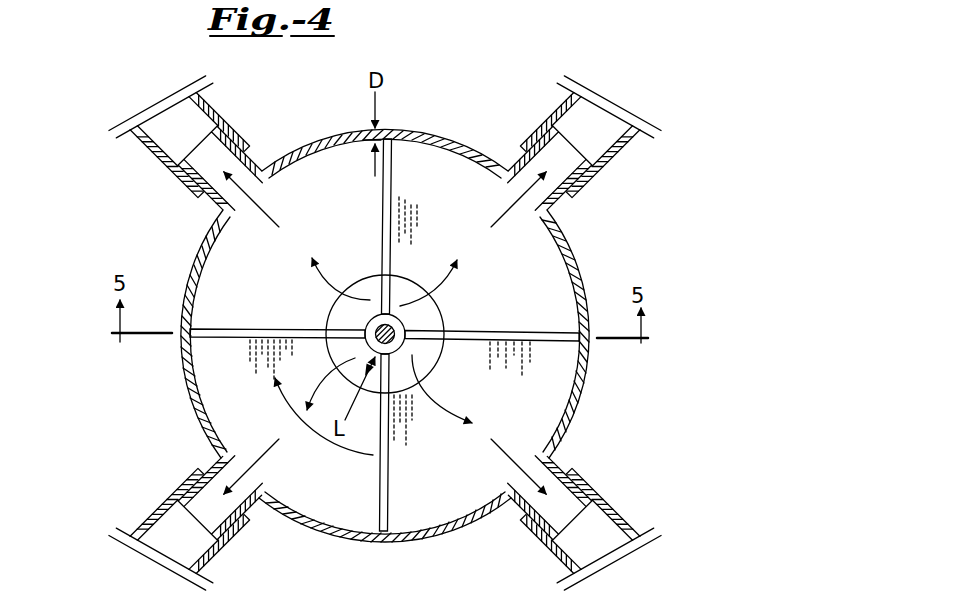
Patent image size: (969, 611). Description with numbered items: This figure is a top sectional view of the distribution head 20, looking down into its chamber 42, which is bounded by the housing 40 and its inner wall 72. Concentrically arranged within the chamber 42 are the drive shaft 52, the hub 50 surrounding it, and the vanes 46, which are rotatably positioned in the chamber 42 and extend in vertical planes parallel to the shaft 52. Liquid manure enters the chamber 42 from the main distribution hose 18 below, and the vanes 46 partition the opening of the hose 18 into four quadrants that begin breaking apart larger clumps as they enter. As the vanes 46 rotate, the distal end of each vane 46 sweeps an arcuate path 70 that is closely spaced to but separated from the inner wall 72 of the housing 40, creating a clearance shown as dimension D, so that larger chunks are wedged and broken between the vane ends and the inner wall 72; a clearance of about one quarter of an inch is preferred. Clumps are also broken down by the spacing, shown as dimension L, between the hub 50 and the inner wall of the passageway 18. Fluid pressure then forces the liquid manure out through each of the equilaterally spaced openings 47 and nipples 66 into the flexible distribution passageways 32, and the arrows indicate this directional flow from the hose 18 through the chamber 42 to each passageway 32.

The main distribution hose 18 is at (428, 352).
The distribution head 20 is at (136, 95).
The flexible distribution passageways 32 is at (545, 152).
The housing 40 is at (580, 414).
The chamber 42 is at (528, 409).
The vanes 46 is at (393, 170).
The openings 47 is at (208, 160).
The hub 50 is at (404, 328).
The drive shaft 52 is at (368, 327).
The nipples 66 is at (563, 213).
The arcuate path 70 is at (365, 131).
The inner wall 72 is at (188, 258).